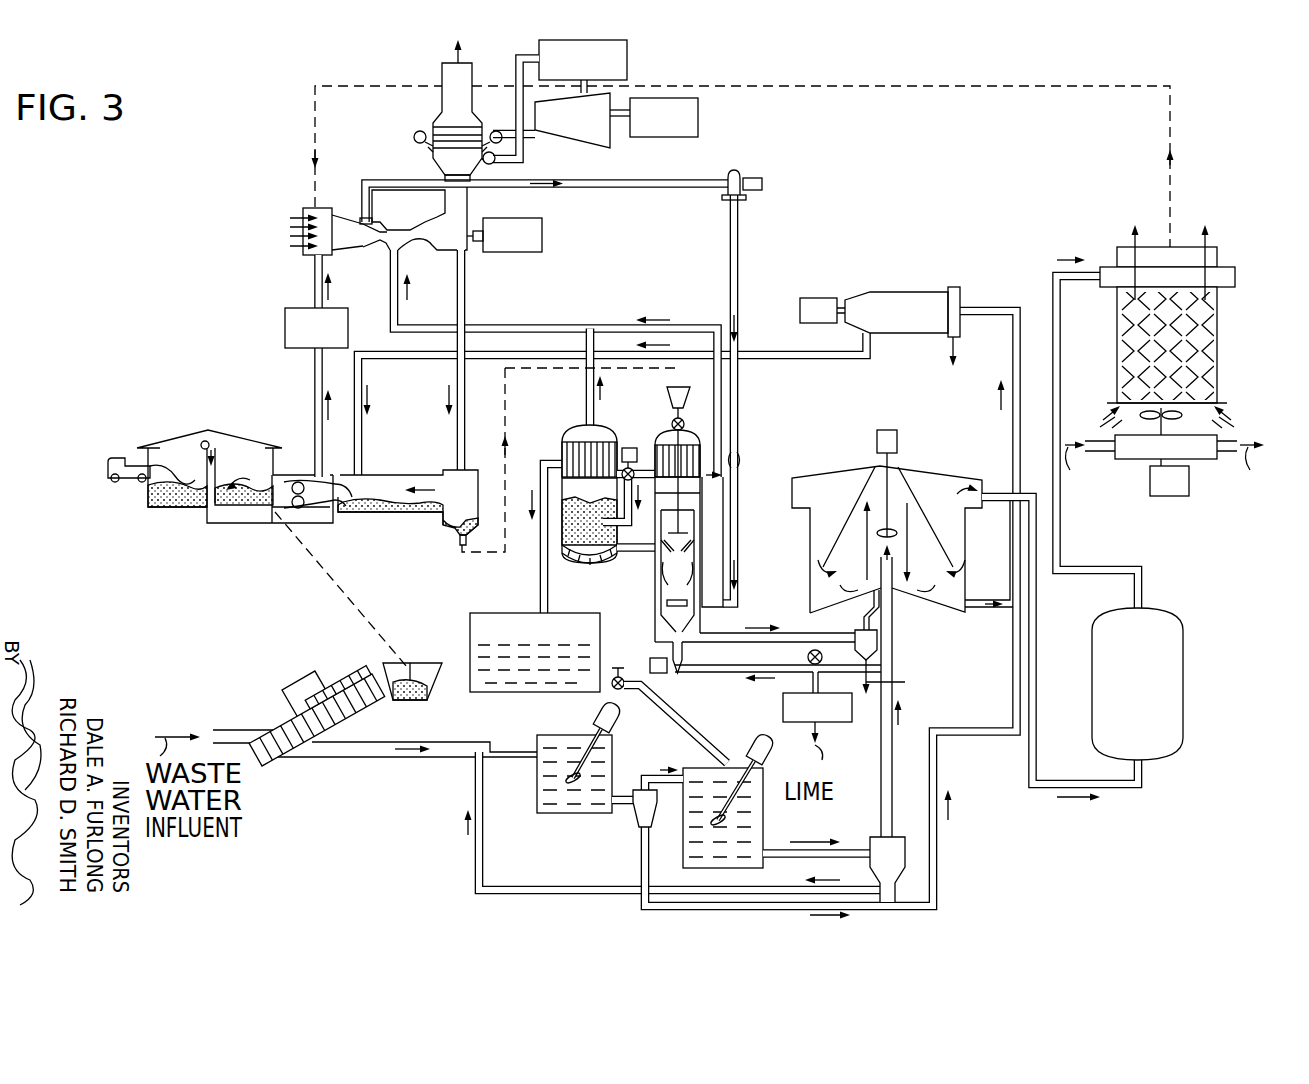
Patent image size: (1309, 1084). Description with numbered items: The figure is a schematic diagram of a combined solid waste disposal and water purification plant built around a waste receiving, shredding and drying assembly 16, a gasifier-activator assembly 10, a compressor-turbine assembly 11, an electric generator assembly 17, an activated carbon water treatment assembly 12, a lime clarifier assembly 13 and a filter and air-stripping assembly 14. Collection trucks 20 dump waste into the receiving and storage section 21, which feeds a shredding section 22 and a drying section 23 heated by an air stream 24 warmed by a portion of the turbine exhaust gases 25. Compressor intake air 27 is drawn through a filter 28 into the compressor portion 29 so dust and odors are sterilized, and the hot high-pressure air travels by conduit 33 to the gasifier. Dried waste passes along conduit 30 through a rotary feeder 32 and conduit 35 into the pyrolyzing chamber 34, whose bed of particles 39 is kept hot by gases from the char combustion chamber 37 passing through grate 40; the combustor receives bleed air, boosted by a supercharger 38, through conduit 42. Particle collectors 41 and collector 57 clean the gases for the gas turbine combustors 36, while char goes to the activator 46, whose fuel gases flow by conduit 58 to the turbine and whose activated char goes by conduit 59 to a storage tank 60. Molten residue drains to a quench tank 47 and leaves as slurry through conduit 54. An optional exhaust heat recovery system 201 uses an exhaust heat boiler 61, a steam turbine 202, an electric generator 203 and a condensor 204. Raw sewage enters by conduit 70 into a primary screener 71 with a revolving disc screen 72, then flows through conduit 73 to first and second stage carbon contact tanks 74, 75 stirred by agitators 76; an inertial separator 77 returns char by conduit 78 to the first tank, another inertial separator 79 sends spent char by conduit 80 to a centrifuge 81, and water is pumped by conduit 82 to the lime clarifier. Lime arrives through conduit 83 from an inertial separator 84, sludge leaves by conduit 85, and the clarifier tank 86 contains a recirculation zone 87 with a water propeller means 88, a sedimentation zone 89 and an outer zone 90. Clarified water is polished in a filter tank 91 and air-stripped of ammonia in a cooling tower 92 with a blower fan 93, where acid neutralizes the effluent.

The gasifier-activator assembly 10 is at (731, 519).
The compressor-turbine assembly 11 is at (413, 210).
The activated carbon water treatment assembly 12 is at (741, 615).
The lime clarifier assembly 13 is at (959, 612).
The filter and air-stripping assembly 14 is at (1168, 492).
The waste receiving, shredding and drying assembly 16 is at (278, 518).
The electric generator assembly 17 is at (508, 252).
The municipal collection trucks 20 is at (128, 482).
The receiving and storage section 21 is at (162, 441).
The shredding section 22 is at (298, 474).
The drying section 23 is at (410, 516).
The heated air stream 24 is at (391, 480).
The exhaust gases 25 is at (455, 386).
The compressor intake air 27 is at (312, 285).
The filter 28 is at (285, 326).
The compressor portion 29 is at (348, 222).
The conduit 30 is at (576, 490).
The rotary feeder 32 is at (671, 426).
The conduit 33 is at (690, 192).
The pyrolyzing chamber 34 is at (701, 527).
The conduit 35 is at (700, 497).
The gas turbine combustors 36 is at (412, 250).
The char combustion chamber 37 is at (658, 575).
The supercharger 38 is at (757, 178).
The bed of particles 39 is at (697, 545).
The grate 40 is at (697, 553).
The particle collectors 41 is at (696, 462).
The conduit 42 is at (740, 598).
The activator 46 is at (556, 484).
The quench tank 47 is at (655, 626).
The conduit 54 is at (738, 642).
The particle collector 57 is at (562, 440).
The conduit 58 is at (587, 388).
The conduit 59 is at (543, 592).
The storage tank 60 is at (470, 622).
The exhaust heat boiler 61 is at (428, 122).
The conduit 70 is at (229, 730).
The primary screener 71 is at (283, 714).
The revolving disc screen 72 is at (267, 768).
The conduit 73 is at (408, 758).
The first stage carbon contact tank 74 is at (537, 794).
The second stage carbon contact tank 75 is at (763, 830).
The agitators 76 is at (598, 712).
The inertial separator 77 is at (903, 875).
The conduit 78 is at (560, 888).
The inertial separator 79 is at (636, 828).
The conduit 80 is at (938, 851).
The centrifuge 81 is at (890, 291).
The conduit 82 is at (895, 770).
The conduit 83 is at (869, 622).
The inertial separator 84 is at (878, 648).
The conduit 85 is at (984, 598).
The clarifier tank 86 is at (810, 562).
The recirculation zone 87 is at (900, 492).
The water propeller means 88 is at (876, 480).
The sedimentation zone 89 is at (949, 603).
The outer zone 90 is at (958, 536).
The filter tank 91 is at (1183, 632).
The cooling tower 92 is at (1224, 351).
The blower fan 93 is at (1158, 497).
The exhaust heat recovery system 201 is at (764, 86).
The turbine 202 is at (600, 148).
The electric generator 203 is at (698, 120).
The condensor 204 is at (627, 44).